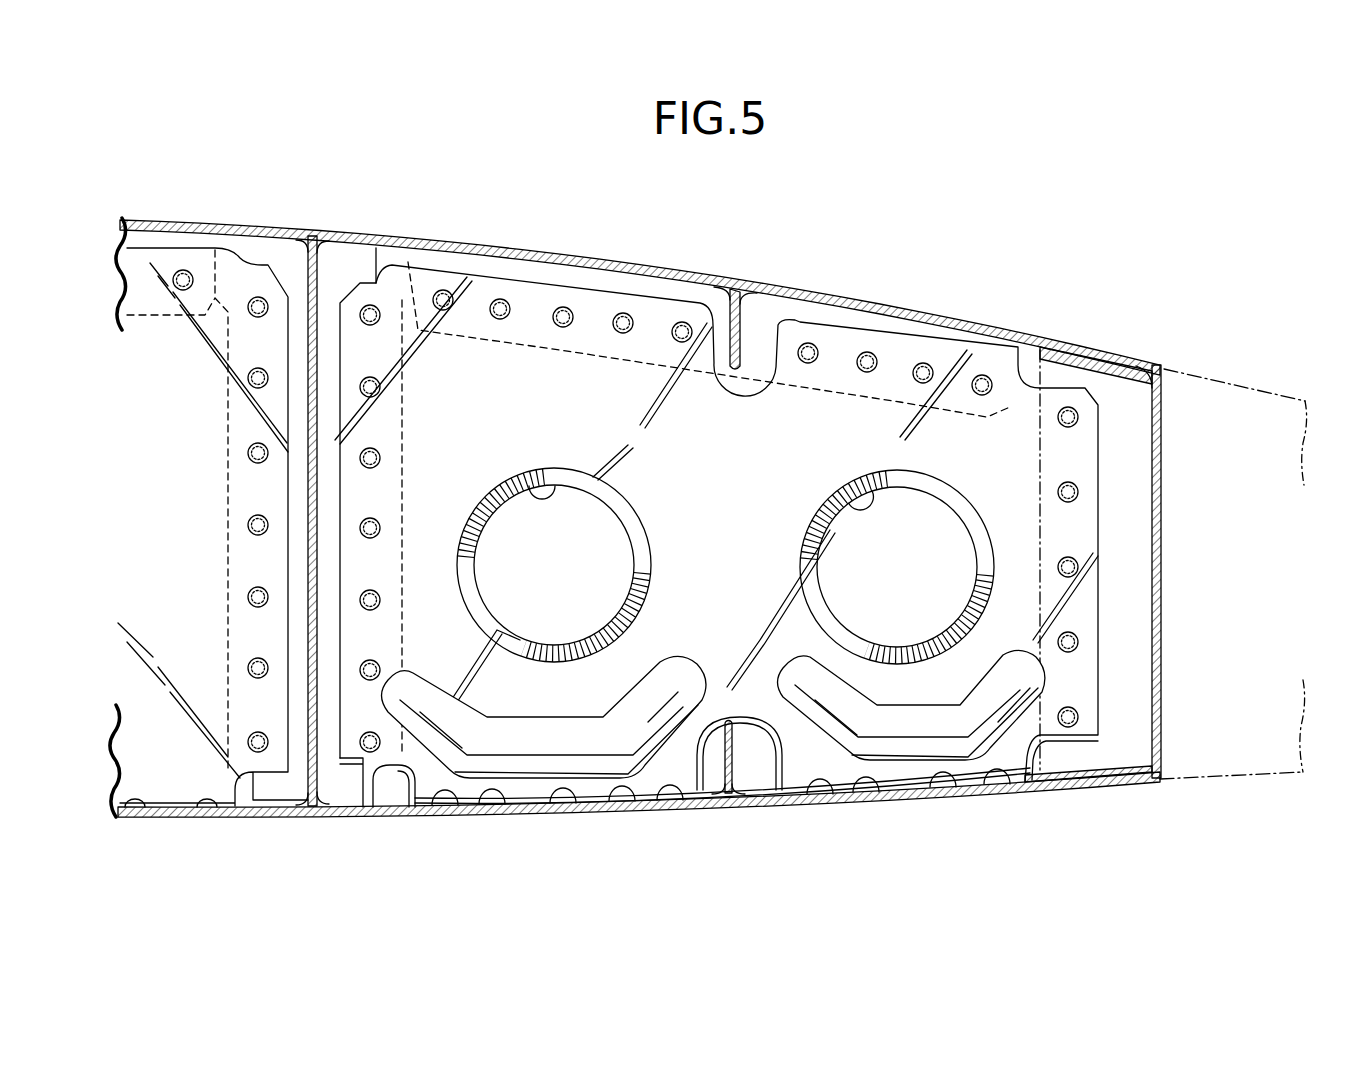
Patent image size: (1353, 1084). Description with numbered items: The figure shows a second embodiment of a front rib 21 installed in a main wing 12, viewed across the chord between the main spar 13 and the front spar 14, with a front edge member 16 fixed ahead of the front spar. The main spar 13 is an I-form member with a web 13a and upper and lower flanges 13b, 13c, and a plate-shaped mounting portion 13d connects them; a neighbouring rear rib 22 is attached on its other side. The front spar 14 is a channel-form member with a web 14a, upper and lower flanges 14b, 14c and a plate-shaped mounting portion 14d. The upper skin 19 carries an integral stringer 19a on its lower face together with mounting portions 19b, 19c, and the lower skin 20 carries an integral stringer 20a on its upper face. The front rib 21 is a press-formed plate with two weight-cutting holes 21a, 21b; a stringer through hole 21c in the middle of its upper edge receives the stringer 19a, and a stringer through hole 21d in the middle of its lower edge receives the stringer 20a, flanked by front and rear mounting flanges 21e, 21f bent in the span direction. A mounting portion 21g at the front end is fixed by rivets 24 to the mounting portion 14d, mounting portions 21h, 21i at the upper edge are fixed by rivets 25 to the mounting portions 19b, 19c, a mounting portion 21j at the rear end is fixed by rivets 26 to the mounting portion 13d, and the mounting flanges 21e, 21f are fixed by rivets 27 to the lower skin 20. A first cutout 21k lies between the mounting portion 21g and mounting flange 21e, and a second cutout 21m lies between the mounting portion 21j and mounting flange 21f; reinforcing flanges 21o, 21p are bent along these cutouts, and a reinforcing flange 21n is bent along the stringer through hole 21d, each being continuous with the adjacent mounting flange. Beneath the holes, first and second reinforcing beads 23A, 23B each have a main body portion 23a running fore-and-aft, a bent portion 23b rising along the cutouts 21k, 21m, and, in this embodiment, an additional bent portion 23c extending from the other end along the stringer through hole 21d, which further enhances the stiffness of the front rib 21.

The main wing 12 is at (752, 242).
The main spar 13 is at (314, 242).
The web 13a is at (312, 570).
The upper flange 13b is at (282, 232).
The lower flange 13c is at (290, 818).
The mounting portion 13d is at (330, 456).
The front spar 14 is at (1130, 370).
The web 14a is at (1160, 478).
The upper flange 14b is at (1090, 355).
The lower flange 14c is at (1112, 786).
The mounting portion 14d is at (1140, 606).
The front edge member 16 is at (1214, 386).
The upper skin 19 is at (598, 252).
The stringer 19a is at (728, 300).
The mounting portion 19b is at (992, 340).
The mounting portion 19c is at (559, 270).
The lower skin 20 is at (531, 824).
The stringer 20a is at (734, 772).
The front rib 21 is at (906, 336).
The weight-cutting hole 21a is at (860, 500).
The weight-cutting hole 21b is at (540, 480).
The stringer through hole 21c is at (772, 330).
The stringer through hole 21d is at (786, 792).
The mounting flange 21e is at (905, 790).
The mounting flange 21f is at (531, 796).
The mounting portion 21g is at (1100, 546).
The mounting portion 21h is at (876, 333).
The mounting portion 21i is at (526, 286).
The mounting portion 21j is at (373, 563).
The first cutout 21k is at (1060, 747).
The second cutout 21m is at (367, 802).
The reinforcing flange 21n is at (746, 692).
The reinforcing flange 21o is at (1074, 713).
The reinforcing flange 21p is at (414, 736).
The rear rib 22 is at (172, 246).
The first reinforcing bead 23A is at (861, 700).
The second reinforcing bead 23B is at (547, 716).
The main body portion 23a is at (589, 735).
The bent portion 23b is at (458, 702).
The bent portion 23c is at (672, 688).
The rivet 24 is at (1078, 490).
The rivet 25 is at (499, 299).
The rivet 26 is at (380, 384).
The rivet 27 is at (492, 806).